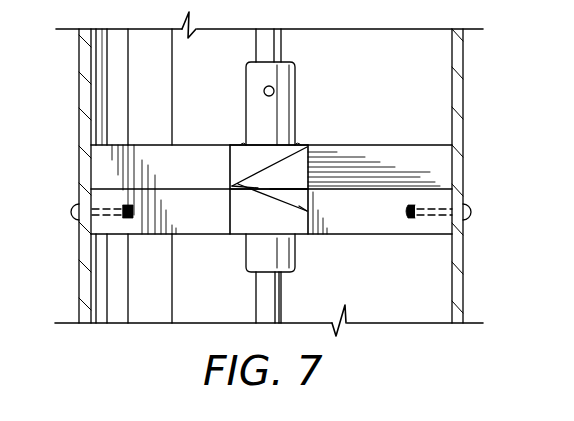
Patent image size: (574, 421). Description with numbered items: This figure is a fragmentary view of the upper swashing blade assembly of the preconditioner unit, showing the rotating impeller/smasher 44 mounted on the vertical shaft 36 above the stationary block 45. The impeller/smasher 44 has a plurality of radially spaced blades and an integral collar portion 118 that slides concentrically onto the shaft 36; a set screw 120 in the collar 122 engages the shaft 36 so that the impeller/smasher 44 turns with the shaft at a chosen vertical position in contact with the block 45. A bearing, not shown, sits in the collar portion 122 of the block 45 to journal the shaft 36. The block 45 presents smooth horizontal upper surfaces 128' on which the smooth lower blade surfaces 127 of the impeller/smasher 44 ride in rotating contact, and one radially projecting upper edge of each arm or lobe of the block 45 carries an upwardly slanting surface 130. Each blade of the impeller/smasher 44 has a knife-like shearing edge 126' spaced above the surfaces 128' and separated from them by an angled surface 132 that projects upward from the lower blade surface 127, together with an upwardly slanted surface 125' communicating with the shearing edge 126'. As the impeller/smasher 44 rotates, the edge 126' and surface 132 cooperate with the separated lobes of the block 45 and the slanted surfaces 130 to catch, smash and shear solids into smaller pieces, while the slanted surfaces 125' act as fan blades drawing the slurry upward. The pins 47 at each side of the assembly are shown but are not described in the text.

The shaft 36 is at (283, 42).
The collar portion 118 is at (295, 73).
The set screw 120 is at (274, 91).
The impeller/smasher 44 is at (378, 144).
The block 45 is at (376, 236).
The pivot pin 47 is at (73, 206).
The upwardly slanted surface 125' is at (254, 138).
The knife-like shearing edge 126' is at (246, 178).
The smooth horizontal upper surface 128' is at (269, 189).
The angled surface 132 is at (262, 186).
The lower blade surface 127 is at (293, 189).
The upwardly slanting surface 130 is at (299, 206).
The collar portion 122 is at (280, 262).